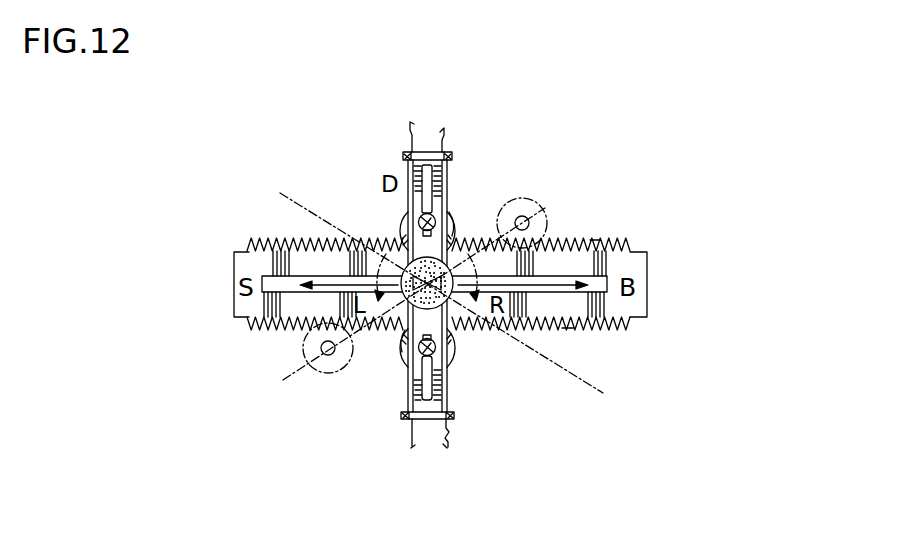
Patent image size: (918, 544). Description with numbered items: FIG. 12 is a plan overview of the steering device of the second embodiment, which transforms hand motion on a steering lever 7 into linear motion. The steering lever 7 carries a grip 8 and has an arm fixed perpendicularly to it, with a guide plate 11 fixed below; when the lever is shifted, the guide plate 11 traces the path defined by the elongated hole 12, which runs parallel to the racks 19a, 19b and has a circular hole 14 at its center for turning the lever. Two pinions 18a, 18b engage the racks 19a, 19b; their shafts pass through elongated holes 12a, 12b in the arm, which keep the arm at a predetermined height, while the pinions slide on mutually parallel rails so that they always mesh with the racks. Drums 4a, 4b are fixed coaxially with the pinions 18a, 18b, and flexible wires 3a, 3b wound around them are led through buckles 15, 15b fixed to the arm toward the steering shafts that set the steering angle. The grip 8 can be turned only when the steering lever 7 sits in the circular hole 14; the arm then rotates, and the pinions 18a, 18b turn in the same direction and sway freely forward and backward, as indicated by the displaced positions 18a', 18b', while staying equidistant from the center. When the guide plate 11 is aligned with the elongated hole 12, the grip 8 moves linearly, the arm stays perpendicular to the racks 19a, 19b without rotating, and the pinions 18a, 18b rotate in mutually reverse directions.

The flexible wire 3a is at (413, 124).
The flexible wire 3b is at (412, 447).
The drum 4a is at (520, 166).
The drum 4b is at (450, 352).
The steering lever 7 is at (339, 376).
The grip 8 is at (361, 376).
The guide plate 11 is at (410, 290).
The elongated hole 12 is at (280, 275).
The elongated hole 12a is at (405, 212).
The elongated hole 12b is at (430, 374).
The circular hole 14 is at (418, 296).
The buckle 15 is at (404, 153).
The buckle 15b is at (455, 417).
The pinion 18a is at (529, 159).
The upper engaging position 18a' is at (585, 183).
The pinion 18b is at (362, 396).
The lower engaging position 18b' is at (274, 363).
The rack 19a is at (596, 243).
The rack 19b is at (572, 330).